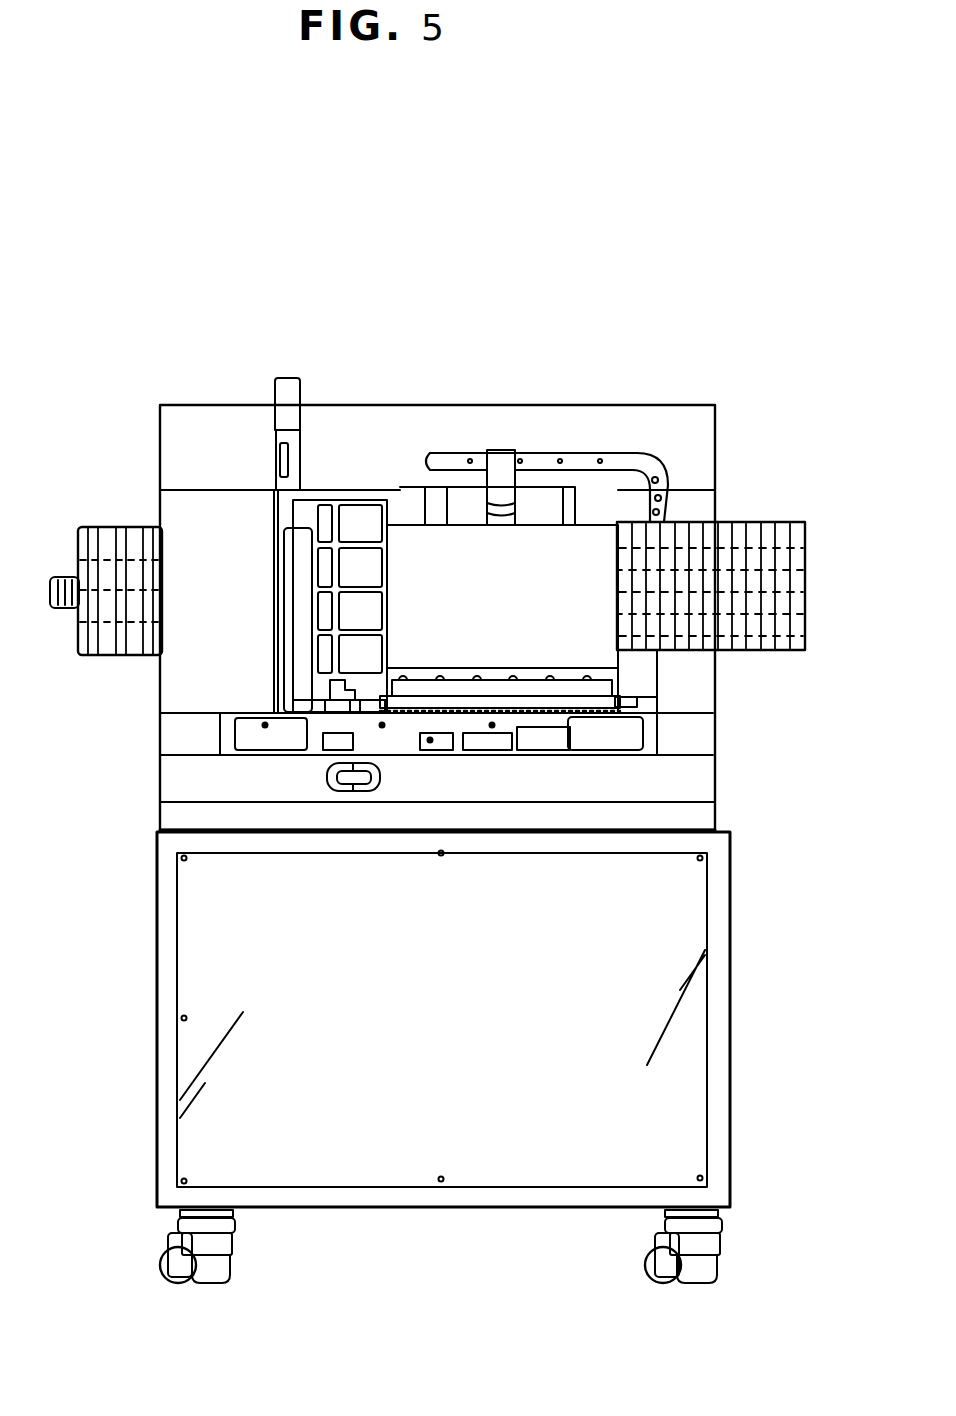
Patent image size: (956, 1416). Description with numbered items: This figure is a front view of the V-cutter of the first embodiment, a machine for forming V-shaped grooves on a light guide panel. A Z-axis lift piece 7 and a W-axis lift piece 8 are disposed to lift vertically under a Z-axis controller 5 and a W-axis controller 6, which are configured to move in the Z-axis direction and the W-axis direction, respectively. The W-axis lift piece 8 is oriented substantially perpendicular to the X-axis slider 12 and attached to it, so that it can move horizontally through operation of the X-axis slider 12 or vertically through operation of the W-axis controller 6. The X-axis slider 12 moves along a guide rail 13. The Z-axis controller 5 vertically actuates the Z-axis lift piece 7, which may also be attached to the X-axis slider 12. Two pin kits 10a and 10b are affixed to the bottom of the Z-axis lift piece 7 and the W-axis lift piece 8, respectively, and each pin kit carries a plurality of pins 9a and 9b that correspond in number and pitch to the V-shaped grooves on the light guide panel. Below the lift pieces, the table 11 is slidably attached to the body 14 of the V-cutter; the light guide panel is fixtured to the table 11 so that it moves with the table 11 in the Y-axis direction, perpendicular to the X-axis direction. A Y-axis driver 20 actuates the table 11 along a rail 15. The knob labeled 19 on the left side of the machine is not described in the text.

The Z-axis controller 5 is at (512, 455).
The W-axis controller 6 is at (287, 395).
The Z-axis lift piece 7 is at (592, 630).
The W-axis lift piece 8 is at (297, 603).
The pins 9a is at (570, 717).
The pins 9b is at (375, 708).
The pin kit 10a is at (620, 722).
The pin kit 10b is at (343, 698).
The table 11 is at (600, 750).
The X-axis slider 12 is at (385, 497).
The guide rail 13 is at (755, 633).
The body 14 is at (178, 780).
The rail 15 is at (557, 753).
The adjustment knob 19 is at (44, 583).
The Y-axis driver 20 is at (432, 742).